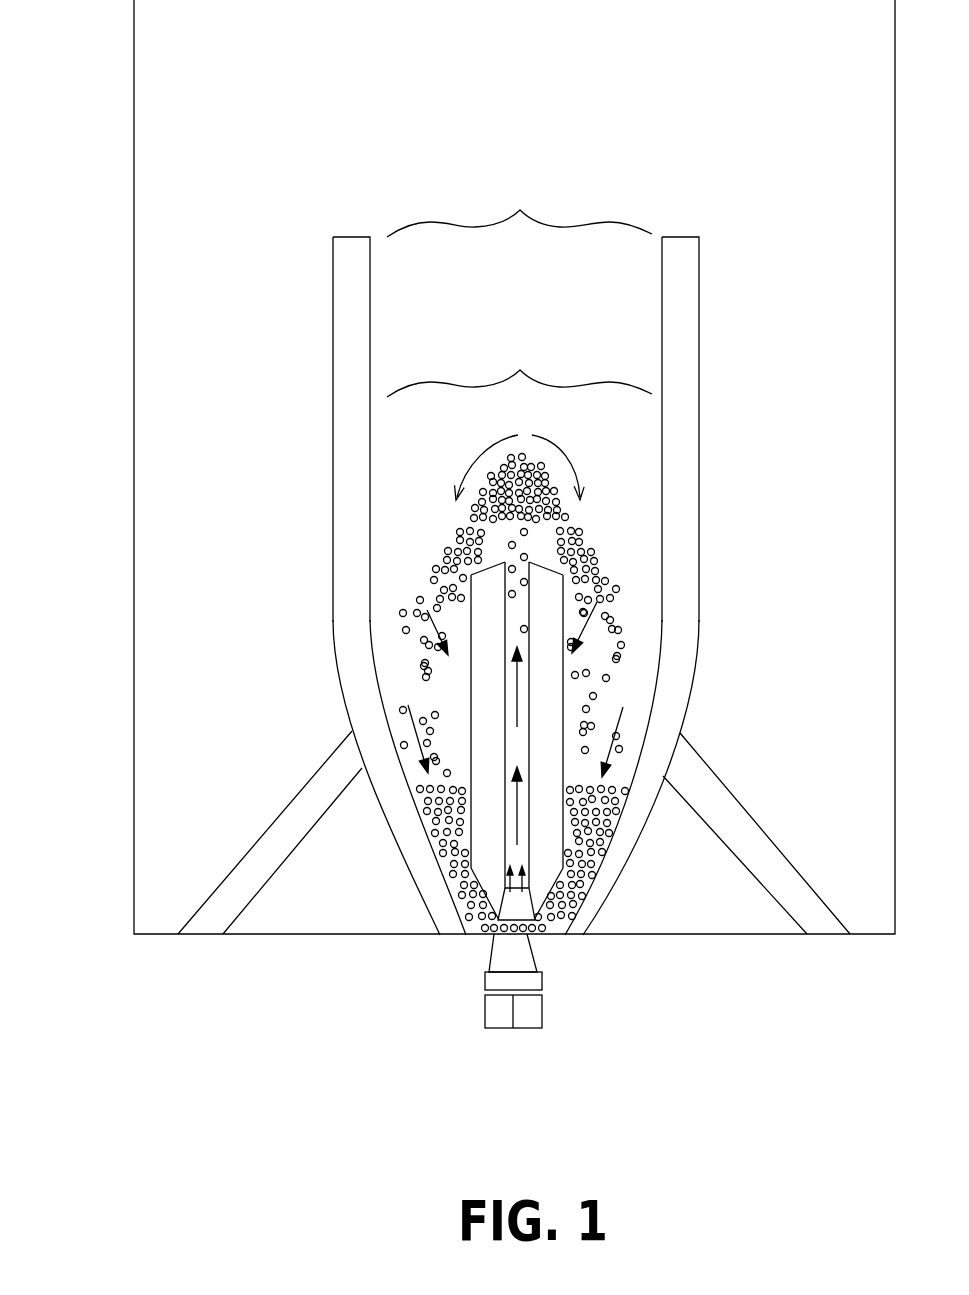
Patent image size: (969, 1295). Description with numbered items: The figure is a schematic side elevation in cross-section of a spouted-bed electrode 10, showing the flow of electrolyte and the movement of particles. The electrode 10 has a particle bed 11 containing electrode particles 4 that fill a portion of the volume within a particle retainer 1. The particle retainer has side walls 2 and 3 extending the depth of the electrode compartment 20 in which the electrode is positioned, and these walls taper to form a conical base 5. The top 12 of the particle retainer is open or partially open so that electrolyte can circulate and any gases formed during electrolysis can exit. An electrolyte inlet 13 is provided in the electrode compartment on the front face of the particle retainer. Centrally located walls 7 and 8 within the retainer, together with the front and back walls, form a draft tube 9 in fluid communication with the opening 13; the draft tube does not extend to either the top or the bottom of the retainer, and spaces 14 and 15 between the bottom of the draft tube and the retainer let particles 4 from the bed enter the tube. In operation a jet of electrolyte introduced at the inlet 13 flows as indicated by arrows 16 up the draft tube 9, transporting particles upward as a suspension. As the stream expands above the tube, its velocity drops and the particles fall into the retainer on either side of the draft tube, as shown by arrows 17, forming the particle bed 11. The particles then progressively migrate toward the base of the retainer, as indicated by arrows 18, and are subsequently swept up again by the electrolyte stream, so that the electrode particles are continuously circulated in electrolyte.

The particle retainer 1 is at (523, 586).
The side wall 2 is at (678, 625).
The side wall 3 is at (353, 619).
The electrode particles 4 is at (460, 537).
The conical base 5 is at (423, 858).
The centrally located wall 7 is at (495, 905).
The centrally located wall 8 is at (560, 905).
The draft tube 9 is at (431, 816).
The electrode 10 is at (519, 365).
The particle bed 11 is at (427, 825).
The top of the particle retainer 12 is at (519, 203).
The electrolyte inlet 13 is at (512, 1007).
The space 14 is at (477, 885).
The space 15 is at (556, 885).
The arrows 16 is at (515, 823).
The arrows 17 is at (477, 462).
The arrows 18 is at (417, 736).
The electrode compartment 20 is at (173, 770).